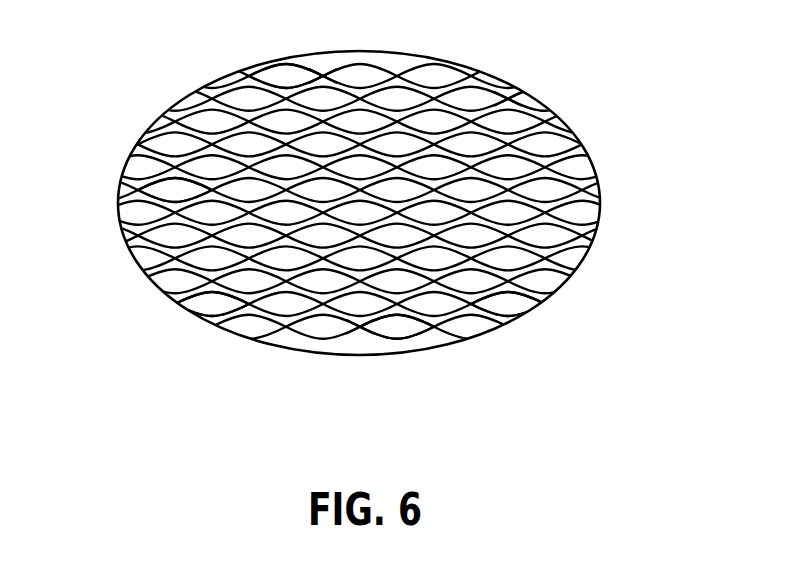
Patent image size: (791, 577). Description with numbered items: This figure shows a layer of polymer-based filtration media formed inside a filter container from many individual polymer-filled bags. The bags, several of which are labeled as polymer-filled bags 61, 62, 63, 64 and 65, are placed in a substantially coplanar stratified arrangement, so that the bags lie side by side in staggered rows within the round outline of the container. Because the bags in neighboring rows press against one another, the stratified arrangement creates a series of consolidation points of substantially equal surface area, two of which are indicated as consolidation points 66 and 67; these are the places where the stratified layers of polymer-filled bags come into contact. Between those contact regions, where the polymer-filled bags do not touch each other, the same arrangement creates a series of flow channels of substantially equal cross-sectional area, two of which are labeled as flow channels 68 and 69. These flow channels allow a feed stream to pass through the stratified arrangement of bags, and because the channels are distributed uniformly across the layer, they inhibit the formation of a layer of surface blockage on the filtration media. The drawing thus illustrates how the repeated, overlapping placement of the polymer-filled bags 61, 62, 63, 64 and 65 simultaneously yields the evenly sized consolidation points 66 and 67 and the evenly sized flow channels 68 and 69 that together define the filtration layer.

The polymer-filled bag 61 is at (441, 70).
The polymer-filled bag 62 is at (268, 72).
The polymer-filled bag 63 is at (152, 193).
The polymer-filled bag 64 is at (195, 308).
The polymer-filled bag 65 is at (400, 335).
The consolidation point 66 is at (497, 323).
The consolidation point 67 is at (338, 80).
The flow channel 68 is at (360, 327).
The flow channel 69 is at (506, 100).